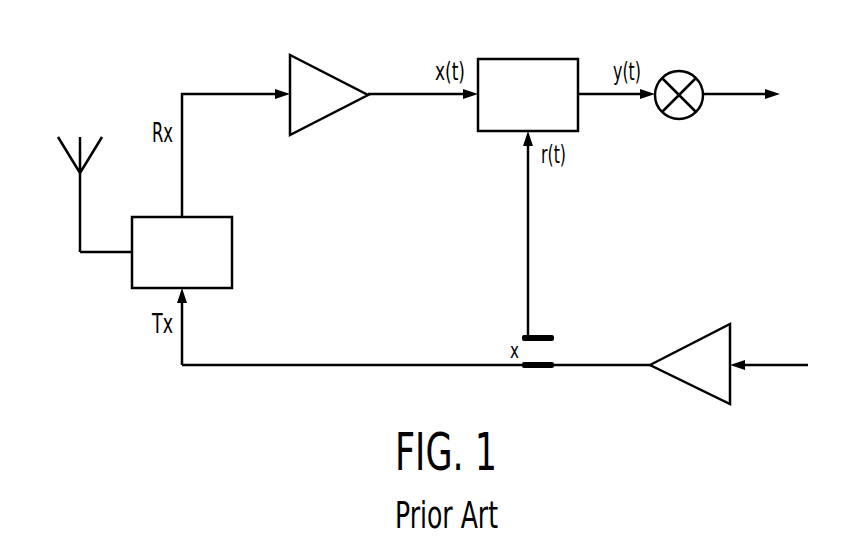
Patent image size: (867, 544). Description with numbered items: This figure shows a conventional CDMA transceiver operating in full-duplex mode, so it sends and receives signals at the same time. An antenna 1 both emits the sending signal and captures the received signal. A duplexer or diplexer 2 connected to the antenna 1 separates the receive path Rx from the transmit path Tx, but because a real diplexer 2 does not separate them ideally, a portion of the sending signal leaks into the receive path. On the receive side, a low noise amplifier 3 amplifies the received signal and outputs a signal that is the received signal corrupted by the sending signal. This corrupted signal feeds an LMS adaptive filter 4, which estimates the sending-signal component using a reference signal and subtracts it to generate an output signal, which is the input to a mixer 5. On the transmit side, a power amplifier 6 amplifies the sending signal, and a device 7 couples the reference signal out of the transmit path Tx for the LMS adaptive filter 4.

The antenna 1 is at (78, 213).
The duplexer or diplexer 2 is at (234, 250).
The low noise amplifier 3 is at (322, 68).
The LMS adaptive filter 4 is at (527, 58).
The mixer 5 is at (678, 72).
The power amplifier 6 is at (688, 342).
The device for coupling out a reference signal 7 is at (548, 335).